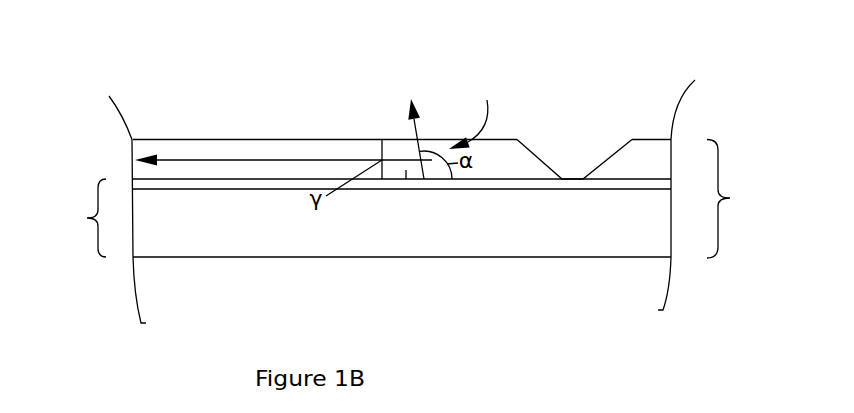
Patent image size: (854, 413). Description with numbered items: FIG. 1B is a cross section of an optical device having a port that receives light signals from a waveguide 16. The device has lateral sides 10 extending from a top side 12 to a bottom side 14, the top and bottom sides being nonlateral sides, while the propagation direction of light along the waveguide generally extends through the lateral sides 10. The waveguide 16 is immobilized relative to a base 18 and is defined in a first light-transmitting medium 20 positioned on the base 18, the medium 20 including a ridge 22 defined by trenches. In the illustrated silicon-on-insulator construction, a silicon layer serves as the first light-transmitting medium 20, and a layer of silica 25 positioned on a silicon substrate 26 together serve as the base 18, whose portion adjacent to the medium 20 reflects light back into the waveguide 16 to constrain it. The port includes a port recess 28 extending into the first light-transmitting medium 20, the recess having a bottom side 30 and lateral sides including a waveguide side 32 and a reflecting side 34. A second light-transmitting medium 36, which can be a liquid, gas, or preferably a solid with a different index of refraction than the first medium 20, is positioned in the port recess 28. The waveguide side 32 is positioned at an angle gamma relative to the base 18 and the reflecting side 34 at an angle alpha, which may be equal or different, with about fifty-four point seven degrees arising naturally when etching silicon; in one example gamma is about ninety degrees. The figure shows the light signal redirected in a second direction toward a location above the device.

The lateral sides 10 is at (735, 199).
The top side 12 is at (642, 138).
The bottom side 14 is at (238, 257).
The waveguide 16 is at (137, 95).
The base 18 is at (79, 218).
The first light-transmitting medium 20 is at (282, 150).
The ridge 22 is at (325, 139).
The layer of silica 25 is at (188, 184).
The silicon substrate 26 is at (362, 248).
The port recess 28 is at (475, 109).
The bottom side 30 is at (393, 180).
The waveguide side 32 is at (383, 146).
The reflecting side 34 is at (431, 150).
The second light-transmitting medium 36 is at (407, 189).